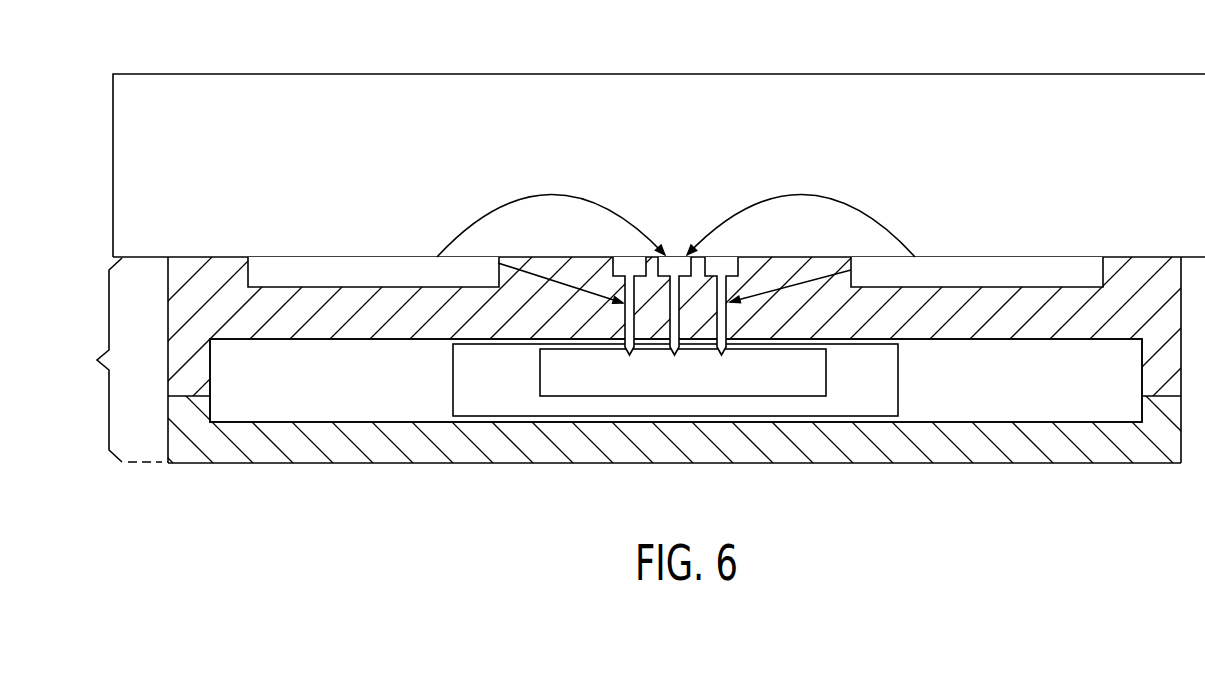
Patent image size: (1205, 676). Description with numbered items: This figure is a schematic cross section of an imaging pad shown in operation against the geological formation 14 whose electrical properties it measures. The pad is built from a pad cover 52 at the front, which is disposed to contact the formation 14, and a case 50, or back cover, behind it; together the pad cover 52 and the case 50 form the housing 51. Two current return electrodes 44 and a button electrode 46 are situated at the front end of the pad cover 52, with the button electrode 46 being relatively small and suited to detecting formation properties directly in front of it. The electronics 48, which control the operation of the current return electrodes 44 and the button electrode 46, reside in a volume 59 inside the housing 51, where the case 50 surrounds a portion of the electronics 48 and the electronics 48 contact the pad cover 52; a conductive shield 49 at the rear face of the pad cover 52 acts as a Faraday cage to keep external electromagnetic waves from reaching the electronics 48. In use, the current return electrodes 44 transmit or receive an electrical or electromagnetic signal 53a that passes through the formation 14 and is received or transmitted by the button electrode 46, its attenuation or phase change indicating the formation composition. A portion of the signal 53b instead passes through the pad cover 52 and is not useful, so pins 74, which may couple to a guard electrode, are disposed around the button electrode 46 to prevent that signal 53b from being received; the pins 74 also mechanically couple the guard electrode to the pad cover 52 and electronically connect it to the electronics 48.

The geological formation 14 is at (702, 108).
The current return electrodes 44 is at (375, 268).
The button electrode 46 is at (682, 348).
The electronics 48 is at (558, 403).
The shield 49 is at (900, 378).
The case 50 is at (738, 463).
The housing 51 is at (114, 360).
The pad cover 52 is at (168, 310).
The electrical or electromagnetic signal 53a is at (548, 194).
The portion of electrical or electromagnetic signal 53b is at (568, 282).
The volume 59 is at (316, 403).
The pins 74 is at (628, 353).